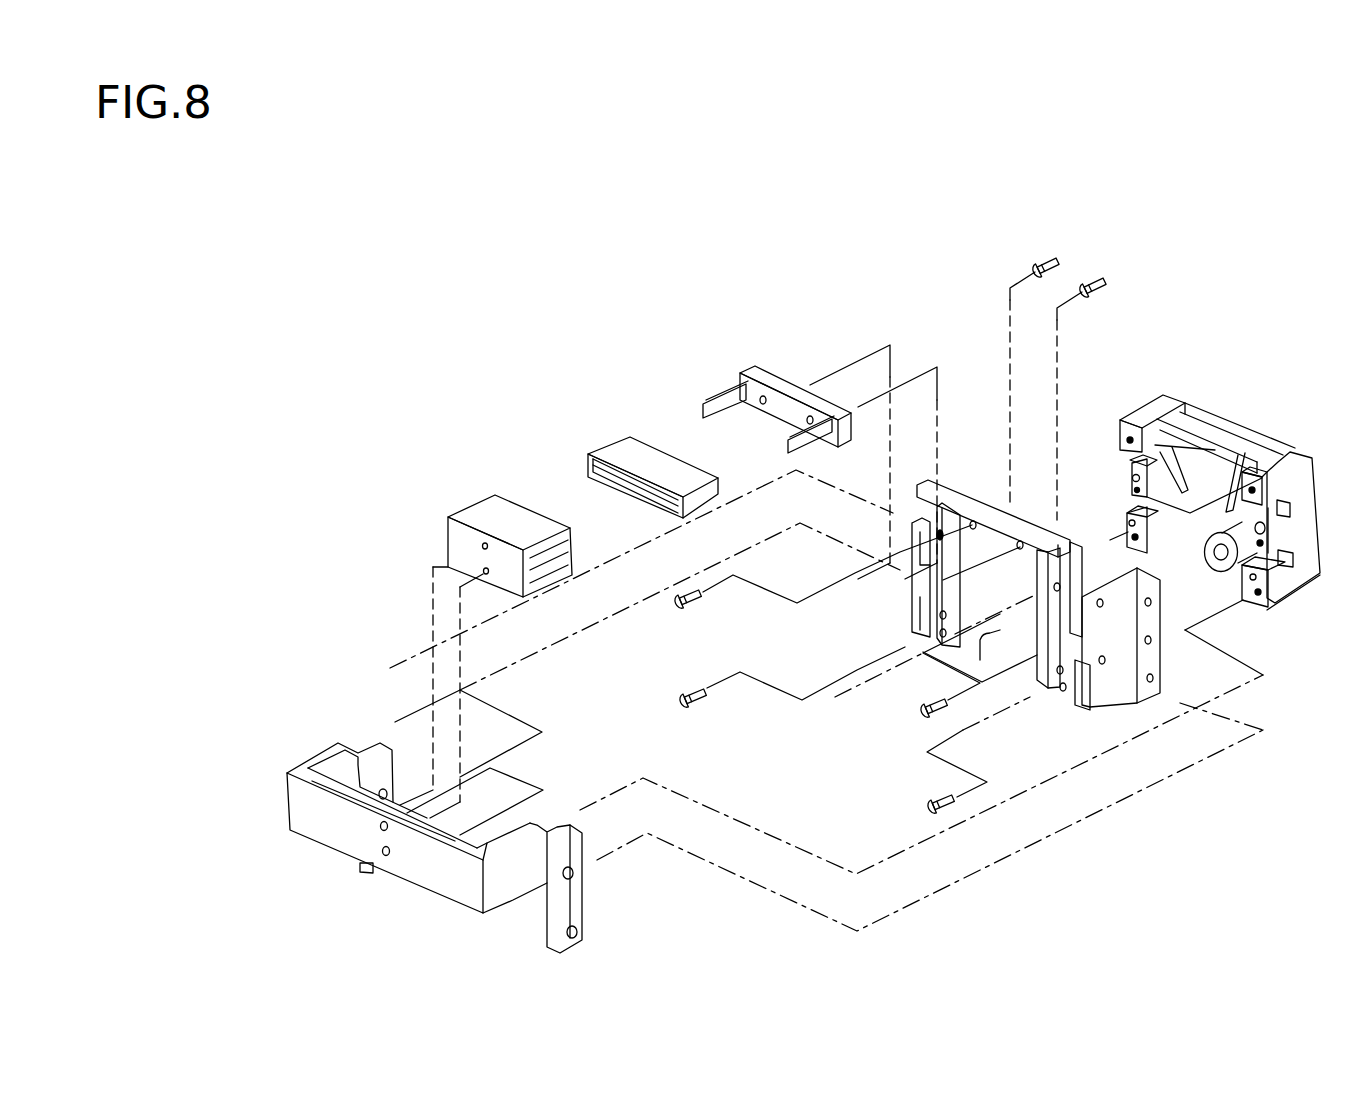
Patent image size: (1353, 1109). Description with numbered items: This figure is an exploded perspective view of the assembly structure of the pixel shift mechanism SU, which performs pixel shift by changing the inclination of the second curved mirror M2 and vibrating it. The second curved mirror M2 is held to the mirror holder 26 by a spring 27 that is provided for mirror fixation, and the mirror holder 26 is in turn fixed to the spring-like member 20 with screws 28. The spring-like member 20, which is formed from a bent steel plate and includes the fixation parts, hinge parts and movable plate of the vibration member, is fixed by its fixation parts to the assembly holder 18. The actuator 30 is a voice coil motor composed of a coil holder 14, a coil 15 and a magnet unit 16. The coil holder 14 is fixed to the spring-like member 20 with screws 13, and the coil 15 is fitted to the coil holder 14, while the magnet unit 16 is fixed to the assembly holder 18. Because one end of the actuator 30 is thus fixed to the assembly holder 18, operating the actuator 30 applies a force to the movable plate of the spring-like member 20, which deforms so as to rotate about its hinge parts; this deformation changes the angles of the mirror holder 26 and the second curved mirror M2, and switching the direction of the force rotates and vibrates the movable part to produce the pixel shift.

The pixel shift mechanism SU is at (1106, 884).
The screws 13 is at (1063, 233).
The coil holder 14 is at (745, 384).
The coil 15 is at (613, 450).
The magnet unit 16 is at (485, 515).
The assembly holder 18 is at (450, 863).
The spring-like member 20 is at (1018, 632).
The mirror holder 26 is at (1163, 408).
The spring 27 is at (1150, 500).
The screws 28 is at (667, 598).
The actuator 30 is at (649, 536).
The second curved mirror M2 is at (1194, 473).